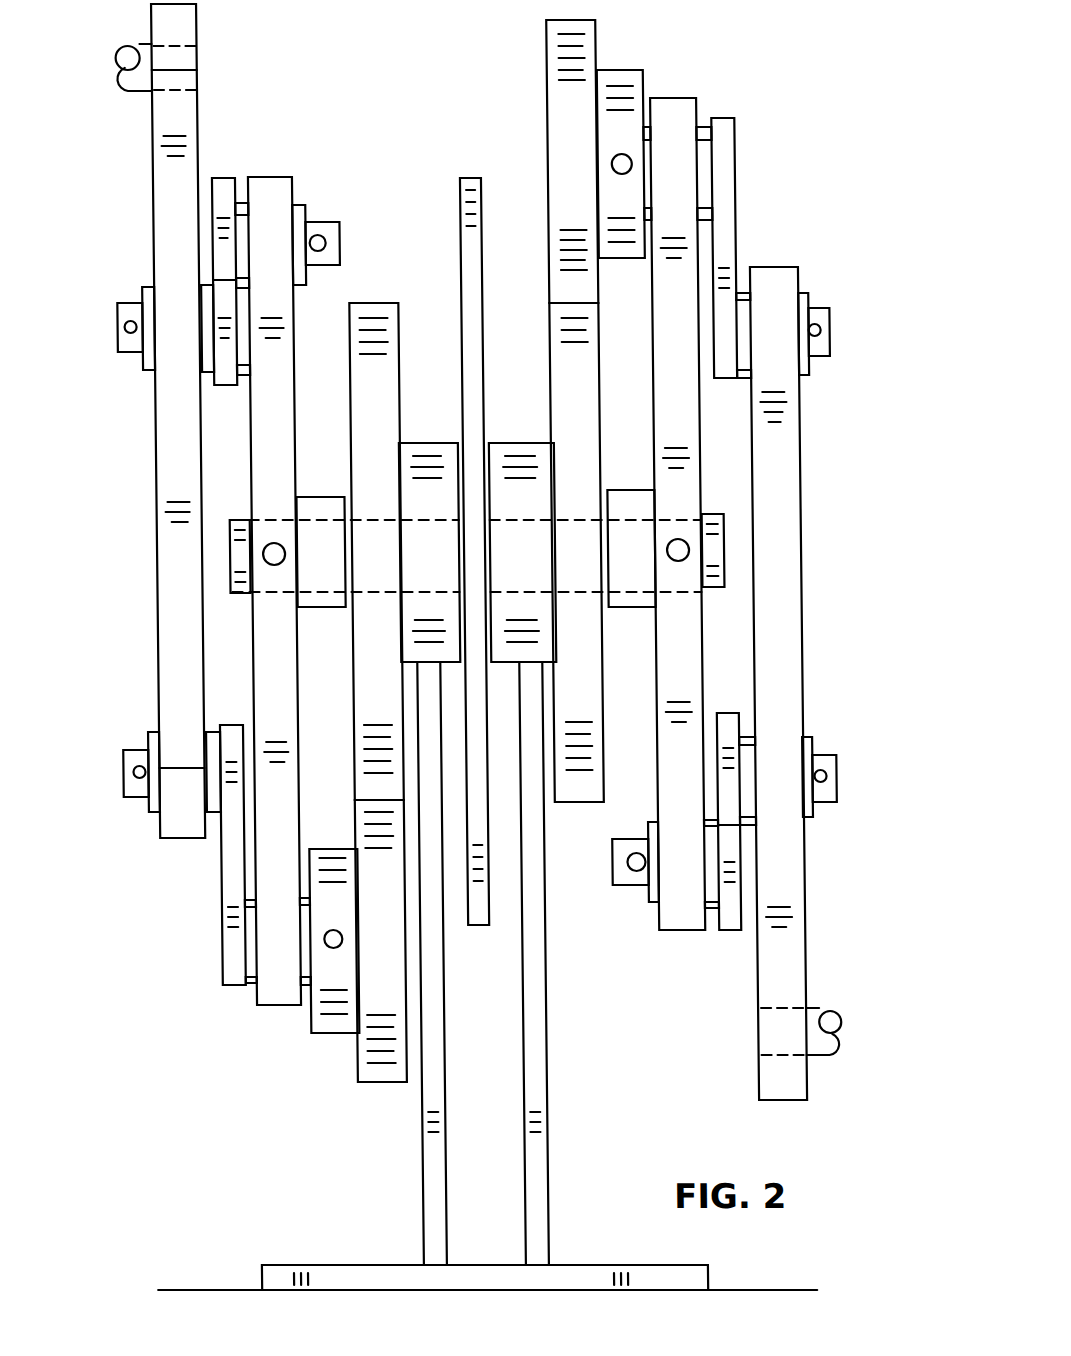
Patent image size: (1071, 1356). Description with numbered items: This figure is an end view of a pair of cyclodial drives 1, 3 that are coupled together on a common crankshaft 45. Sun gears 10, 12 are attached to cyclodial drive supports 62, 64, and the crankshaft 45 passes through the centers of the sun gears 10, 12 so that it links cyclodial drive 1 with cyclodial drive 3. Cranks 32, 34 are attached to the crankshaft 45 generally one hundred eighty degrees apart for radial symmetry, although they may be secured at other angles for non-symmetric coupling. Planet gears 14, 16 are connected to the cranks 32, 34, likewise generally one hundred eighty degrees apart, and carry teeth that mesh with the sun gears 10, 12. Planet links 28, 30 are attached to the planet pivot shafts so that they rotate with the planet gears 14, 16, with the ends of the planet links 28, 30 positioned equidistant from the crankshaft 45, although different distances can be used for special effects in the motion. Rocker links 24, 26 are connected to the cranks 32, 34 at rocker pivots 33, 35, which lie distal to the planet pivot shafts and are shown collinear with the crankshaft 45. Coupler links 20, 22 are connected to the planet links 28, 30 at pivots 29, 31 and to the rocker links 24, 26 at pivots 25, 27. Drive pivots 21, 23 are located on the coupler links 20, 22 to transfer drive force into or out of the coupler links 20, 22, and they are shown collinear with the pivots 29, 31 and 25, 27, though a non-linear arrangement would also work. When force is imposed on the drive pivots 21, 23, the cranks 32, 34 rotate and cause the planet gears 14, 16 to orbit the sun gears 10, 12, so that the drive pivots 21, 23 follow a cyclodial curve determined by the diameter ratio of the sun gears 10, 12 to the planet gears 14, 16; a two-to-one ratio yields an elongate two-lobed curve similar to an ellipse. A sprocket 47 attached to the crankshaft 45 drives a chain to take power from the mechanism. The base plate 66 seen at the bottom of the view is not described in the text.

The cyclodial drive 1 is at (701, 62).
The cyclodial drive 3 is at (259, 80).
The sun gear 10 is at (547, 318).
The sun gear 12 is at (367, 303).
The planet gear 14 is at (545, 58).
The planet gear 16 is at (346, 1083).
The coupler link 20 is at (795, 605).
The drive pivot 21 is at (807, 1005).
The coupler link 22 is at (148, 636).
The drive pivot 23 is at (116, 50).
The rocker link 24 is at (731, 867).
The pivot 25 is at (817, 755).
The rocker link 26 is at (209, 245).
The pivot 27 is at (113, 350).
The planet link 28 is at (733, 208).
The pivot 29 is at (823, 302).
The planet link 30 is at (212, 887).
The pivot 31 is at (113, 792).
The crank 32 is at (697, 468).
The rocker pivot 33 is at (620, 882).
The crank 34 is at (245, 447).
The rocker pivot 35 is at (316, 222).
The crankshaft 45 is at (719, 538).
The sprocket 47 is at (468, 178).
The cyclodial drive support 62 is at (540, 1118).
The cyclodial drive support 64 is at (413, 1168).
The base 66 is at (296, 1265).